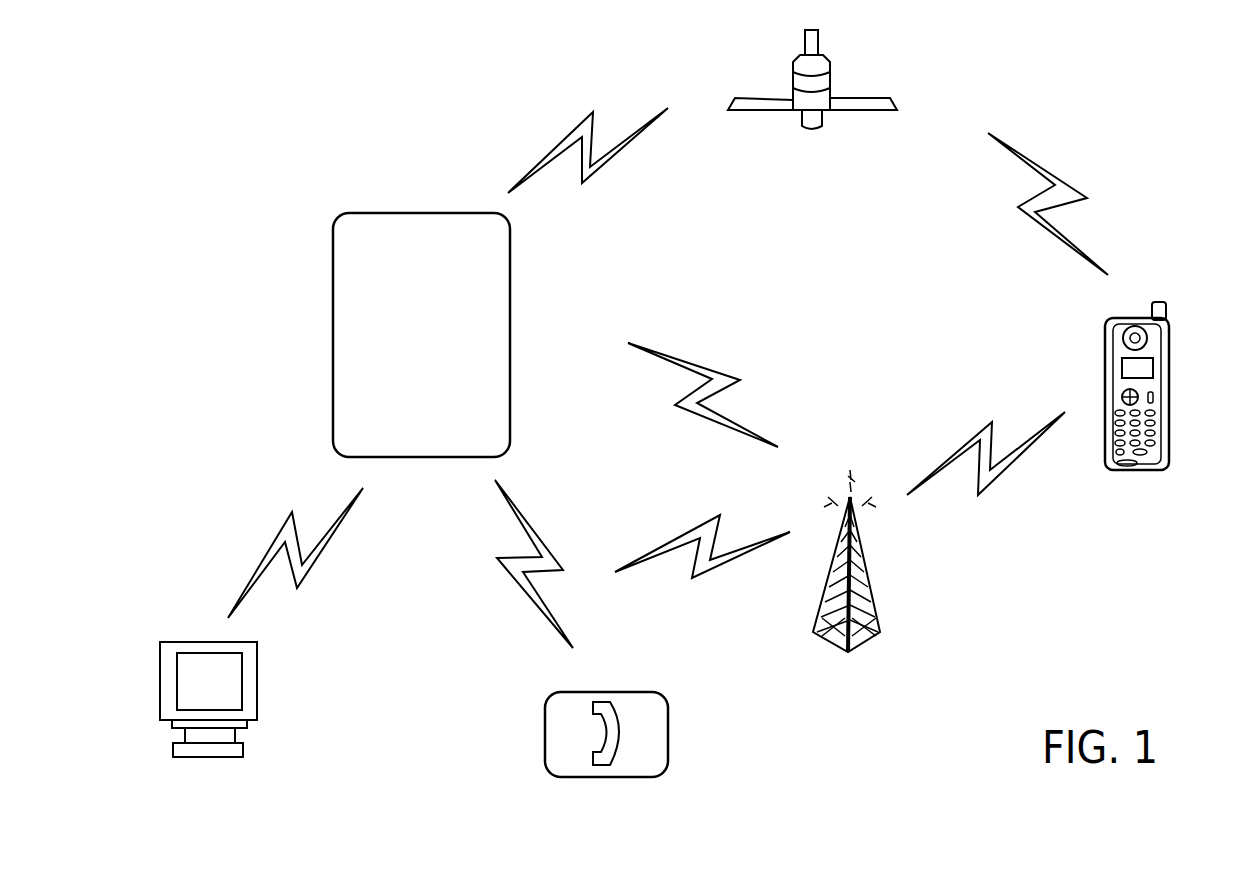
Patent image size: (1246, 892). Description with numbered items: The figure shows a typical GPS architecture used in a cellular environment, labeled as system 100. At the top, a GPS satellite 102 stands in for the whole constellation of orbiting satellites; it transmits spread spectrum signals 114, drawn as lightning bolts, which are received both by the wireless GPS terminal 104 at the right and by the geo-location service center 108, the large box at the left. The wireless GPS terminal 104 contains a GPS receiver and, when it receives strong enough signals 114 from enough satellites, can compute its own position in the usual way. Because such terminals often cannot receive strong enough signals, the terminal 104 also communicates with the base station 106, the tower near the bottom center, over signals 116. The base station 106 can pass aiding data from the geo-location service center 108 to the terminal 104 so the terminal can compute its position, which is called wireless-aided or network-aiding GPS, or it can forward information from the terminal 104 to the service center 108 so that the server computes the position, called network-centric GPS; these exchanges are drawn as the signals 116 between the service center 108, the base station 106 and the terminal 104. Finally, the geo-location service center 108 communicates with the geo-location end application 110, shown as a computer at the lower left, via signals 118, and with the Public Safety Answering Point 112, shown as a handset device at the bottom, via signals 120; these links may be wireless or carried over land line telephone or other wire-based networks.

The system 100 is at (333, 112).
The GPS satellite 102 is at (865, 98).
The wireless GPS terminal 104 is at (1168, 388).
The base station 106 is at (877, 603).
The geo-location service center 108 is at (420, 213).
The geo-location end application 110 is at (210, 640).
The Public Safety Answering Point (PSAP) 112 is at (585, 692).
The spread spectrum signals 114 is at (575, 128).
The signals 116 is at (665, 355).
The signals 118 is at (278, 530).
The signals 120 is at (520, 510).